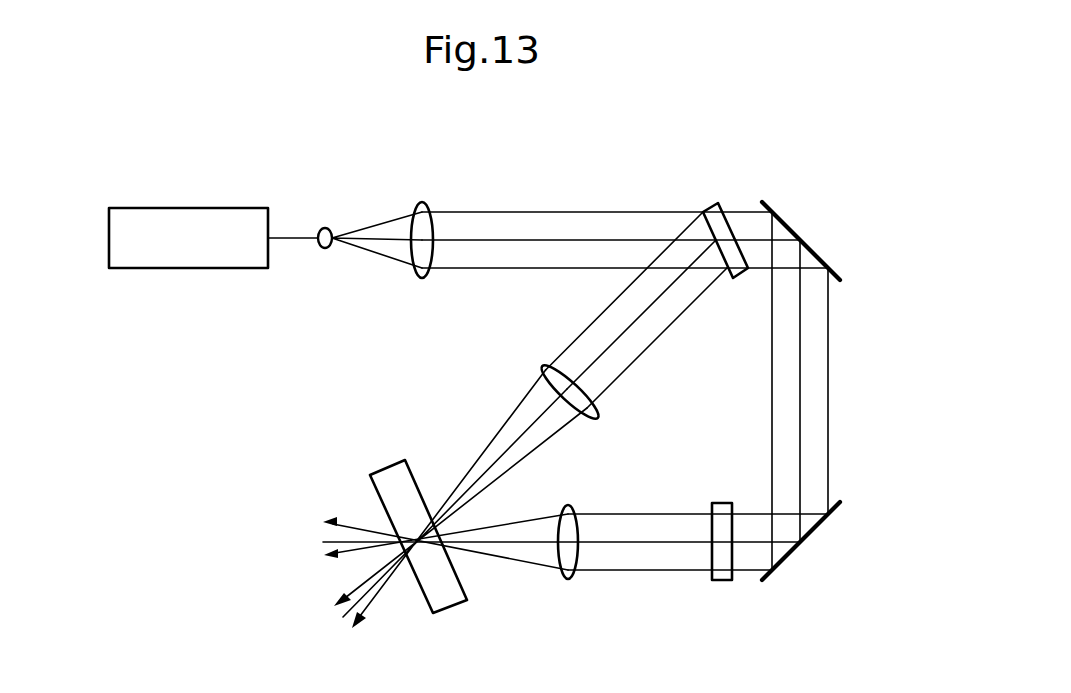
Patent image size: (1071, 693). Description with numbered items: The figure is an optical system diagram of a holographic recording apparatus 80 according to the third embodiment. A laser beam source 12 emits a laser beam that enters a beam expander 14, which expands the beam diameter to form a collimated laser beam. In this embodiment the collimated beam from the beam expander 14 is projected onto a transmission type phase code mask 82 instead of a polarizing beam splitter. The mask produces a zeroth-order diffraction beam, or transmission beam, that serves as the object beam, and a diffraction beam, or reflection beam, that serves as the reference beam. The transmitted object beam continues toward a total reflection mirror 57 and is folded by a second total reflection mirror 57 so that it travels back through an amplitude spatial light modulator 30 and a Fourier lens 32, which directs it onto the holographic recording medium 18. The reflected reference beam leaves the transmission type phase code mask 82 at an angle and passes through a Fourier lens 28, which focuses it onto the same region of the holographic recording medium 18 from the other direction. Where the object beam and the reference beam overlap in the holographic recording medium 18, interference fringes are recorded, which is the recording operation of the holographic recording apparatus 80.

The laser beam source 12 is at (181, 209).
The beam expander 14 is at (440, 197).
The transmission type phase code mask 82 is at (704, 211).
The total reflection mirror 57 is at (820, 259).
The Fourier lens 28 is at (598, 418).
The holographic recording apparatus 80 is at (315, 393).
The holographic recording medium 18 is at (462, 603).
The Fourier lens 32 is at (568, 579).
The amplitude spatial light modulator 30 is at (722, 580).